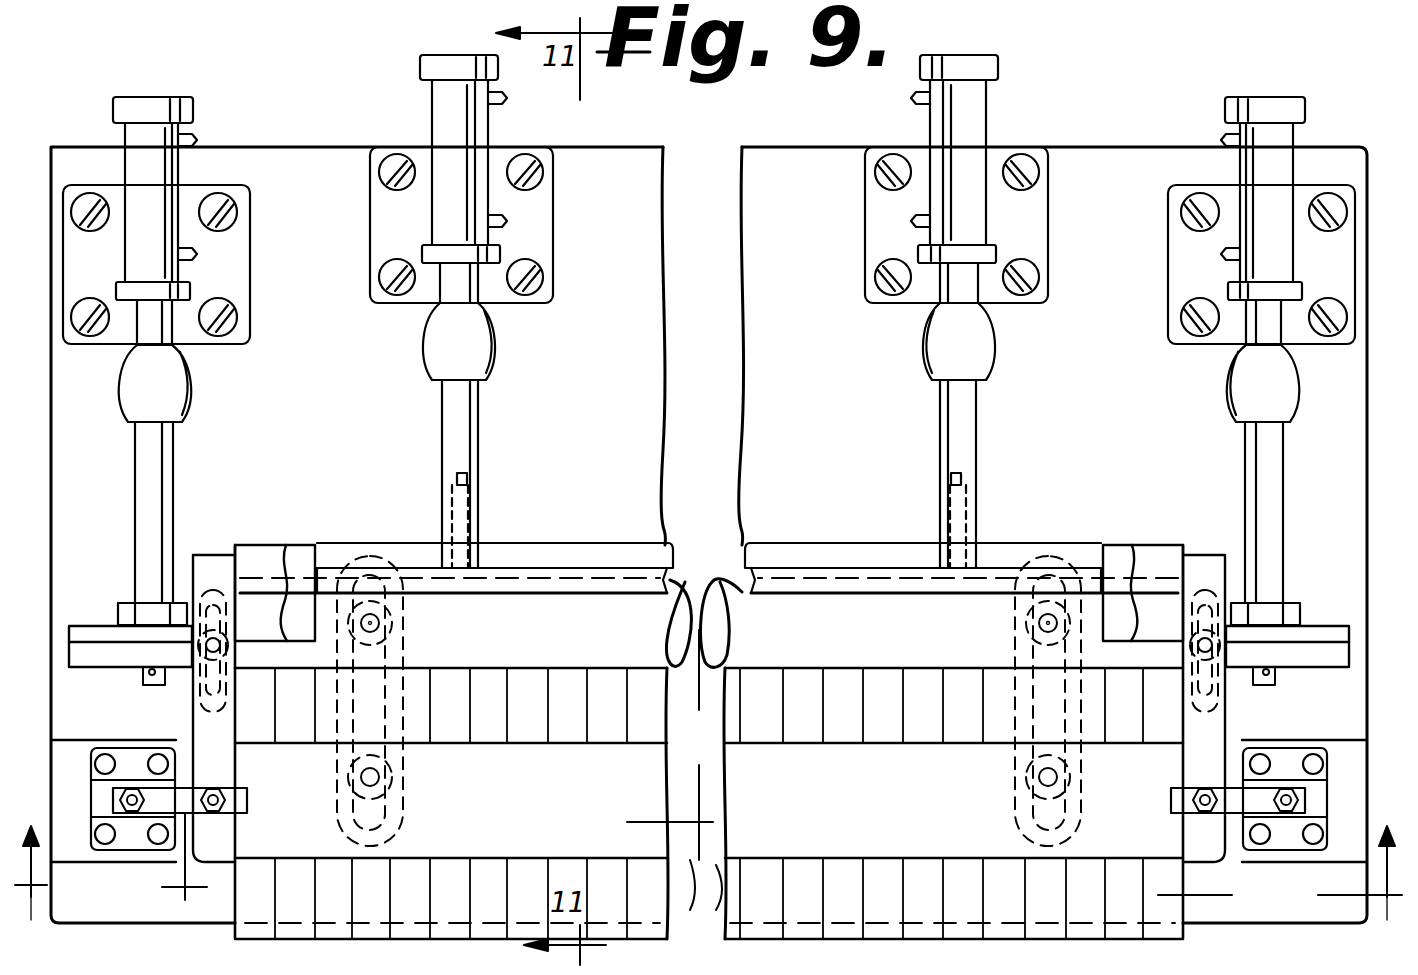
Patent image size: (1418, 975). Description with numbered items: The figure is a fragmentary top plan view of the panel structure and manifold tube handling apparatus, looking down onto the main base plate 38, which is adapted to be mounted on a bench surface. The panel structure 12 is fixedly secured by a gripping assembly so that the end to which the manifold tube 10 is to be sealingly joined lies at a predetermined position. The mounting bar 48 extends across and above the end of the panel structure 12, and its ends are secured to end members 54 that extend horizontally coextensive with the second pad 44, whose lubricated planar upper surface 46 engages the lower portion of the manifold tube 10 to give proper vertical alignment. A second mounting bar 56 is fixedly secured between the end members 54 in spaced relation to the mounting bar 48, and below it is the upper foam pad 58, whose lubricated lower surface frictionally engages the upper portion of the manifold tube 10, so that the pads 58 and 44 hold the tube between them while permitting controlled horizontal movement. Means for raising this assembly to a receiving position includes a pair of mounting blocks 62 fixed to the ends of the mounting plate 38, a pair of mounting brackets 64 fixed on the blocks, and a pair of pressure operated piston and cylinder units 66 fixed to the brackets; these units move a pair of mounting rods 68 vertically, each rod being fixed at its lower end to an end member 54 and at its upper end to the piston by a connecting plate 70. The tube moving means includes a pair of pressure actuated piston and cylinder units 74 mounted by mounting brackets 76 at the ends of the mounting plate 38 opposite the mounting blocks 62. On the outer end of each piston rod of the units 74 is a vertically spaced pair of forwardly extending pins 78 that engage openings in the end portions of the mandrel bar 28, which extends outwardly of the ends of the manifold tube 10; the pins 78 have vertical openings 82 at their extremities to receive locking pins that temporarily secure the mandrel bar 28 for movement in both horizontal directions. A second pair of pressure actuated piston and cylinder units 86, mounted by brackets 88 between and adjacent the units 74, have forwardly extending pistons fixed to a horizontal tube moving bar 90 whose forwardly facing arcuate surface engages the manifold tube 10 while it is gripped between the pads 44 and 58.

The manifold tube 10 is at (842, 525).
The panel structure 12 is at (226, 898).
The mandrel bar 28 is at (90, 650).
The main base plate 38 is at (294, 152).
The second pad 44 is at (565, 545).
The upper surface of the pad 46 is at (505, 553).
The mounting bar 48 is at (770, 838).
The end members 54 is at (205, 728).
The second mounting bar 56 is at (258, 562).
The upper foam pad 58 is at (335, 565).
The mounting blocks 62 is at (62, 778).
The mounting brackets 64 is at (127, 760).
The pressure operated piston and cylinder units 66 is at (125, 815).
The mounting rods 68 is at (250, 800).
The connecting plate 70 is at (190, 786).
The pressure actuated piston and cylinder units 74 is at (160, 175).
The mounting brackets 76 is at (233, 268).
The pins 78 is at (143, 684).
The vertical openings 82 is at (190, 672).
The second pair of pressure actuated piston and cylinder units 86 is at (478, 205).
The brackets 88 is at (540, 253).
The tube moving bar 90 is at (607, 583).